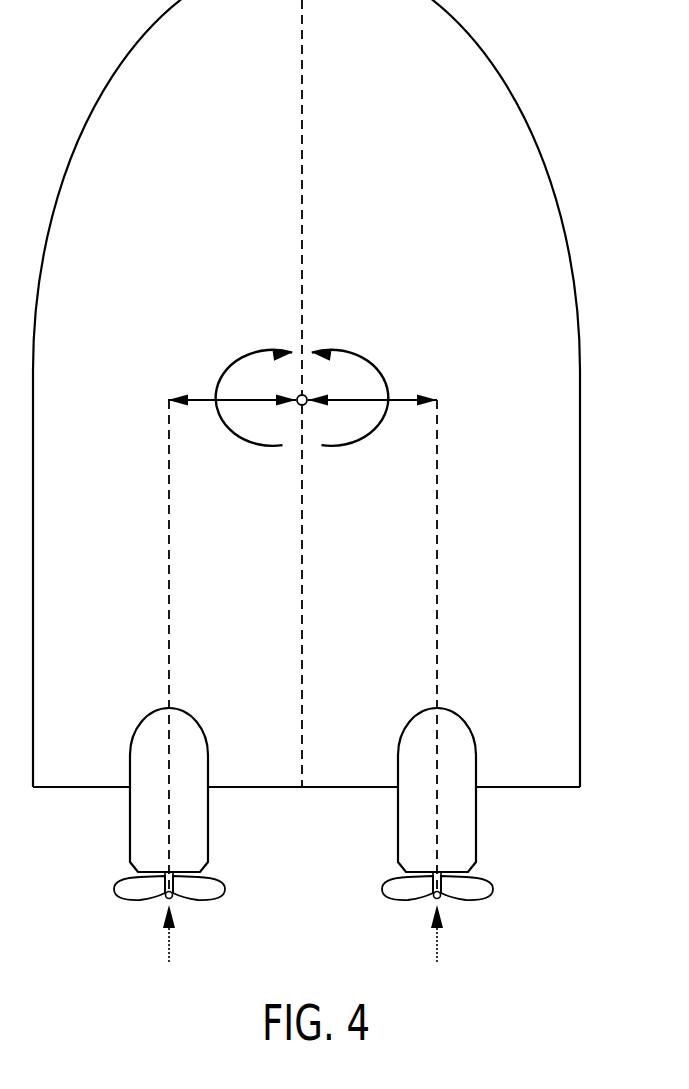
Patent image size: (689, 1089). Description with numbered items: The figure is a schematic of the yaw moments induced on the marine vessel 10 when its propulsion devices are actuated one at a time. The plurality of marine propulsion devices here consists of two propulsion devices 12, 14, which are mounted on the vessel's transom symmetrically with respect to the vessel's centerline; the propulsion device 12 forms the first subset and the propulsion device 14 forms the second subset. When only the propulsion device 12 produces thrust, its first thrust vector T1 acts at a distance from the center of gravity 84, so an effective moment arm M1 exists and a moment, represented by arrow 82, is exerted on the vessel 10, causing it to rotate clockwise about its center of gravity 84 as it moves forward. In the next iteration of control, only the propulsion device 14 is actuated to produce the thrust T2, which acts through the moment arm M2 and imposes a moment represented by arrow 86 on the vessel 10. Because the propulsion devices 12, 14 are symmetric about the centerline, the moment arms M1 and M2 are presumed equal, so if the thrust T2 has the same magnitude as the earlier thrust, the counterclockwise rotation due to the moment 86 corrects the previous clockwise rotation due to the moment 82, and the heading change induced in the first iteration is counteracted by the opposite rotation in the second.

The marine vessel 10 is at (507, 86).
The propulsion device 12 is at (208, 815).
The propulsion device 14 is at (398, 826).
The moment 82 is at (256, 435).
The center of gravity 84 is at (301, 393).
The moment 86 is at (351, 428).
The effective moment arm M1 is at (212, 397).
The moment arm M2 is at (387, 397).
The first thrust vector T1 is at (172, 937).
The thrust T2 is at (440, 937).